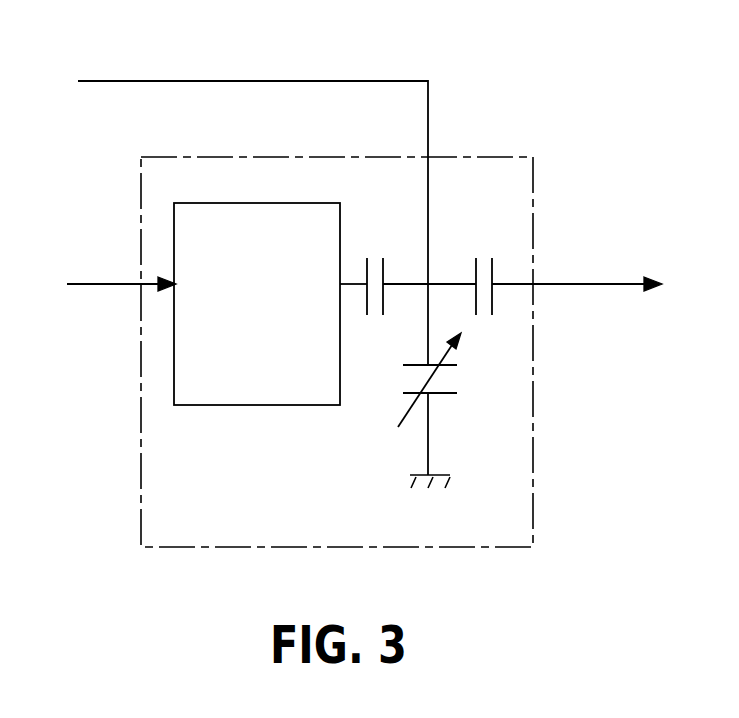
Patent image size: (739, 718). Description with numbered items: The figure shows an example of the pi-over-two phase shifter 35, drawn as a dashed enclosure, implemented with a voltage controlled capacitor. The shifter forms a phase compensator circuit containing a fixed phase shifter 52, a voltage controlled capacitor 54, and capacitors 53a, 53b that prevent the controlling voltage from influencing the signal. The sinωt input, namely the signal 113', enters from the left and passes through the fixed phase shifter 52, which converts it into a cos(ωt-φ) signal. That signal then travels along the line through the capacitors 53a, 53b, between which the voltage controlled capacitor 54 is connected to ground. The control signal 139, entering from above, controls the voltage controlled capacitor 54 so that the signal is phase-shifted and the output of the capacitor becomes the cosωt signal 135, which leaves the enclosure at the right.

The π/2 phase shifter 35 is at (520, 156).
The control signal 139 is at (183, 80).
The signal 113' is at (98, 300).
The fixed phase shifter 52 is at (255, 406).
The capacitor 53a is at (375, 255).
The capacitor 53b is at (483, 258).
The voltage controlled capacitor 54 is at (448, 380).
The cosωt signal 135 is at (618, 311).